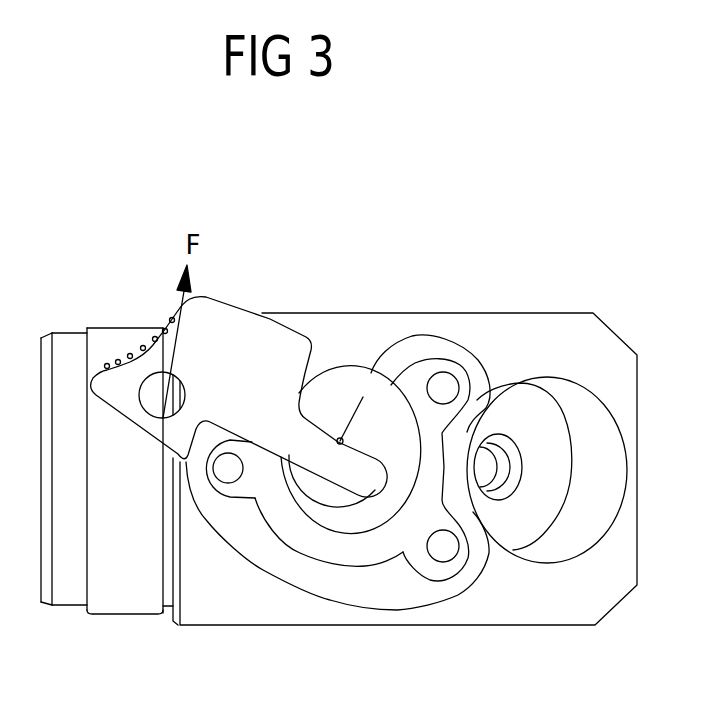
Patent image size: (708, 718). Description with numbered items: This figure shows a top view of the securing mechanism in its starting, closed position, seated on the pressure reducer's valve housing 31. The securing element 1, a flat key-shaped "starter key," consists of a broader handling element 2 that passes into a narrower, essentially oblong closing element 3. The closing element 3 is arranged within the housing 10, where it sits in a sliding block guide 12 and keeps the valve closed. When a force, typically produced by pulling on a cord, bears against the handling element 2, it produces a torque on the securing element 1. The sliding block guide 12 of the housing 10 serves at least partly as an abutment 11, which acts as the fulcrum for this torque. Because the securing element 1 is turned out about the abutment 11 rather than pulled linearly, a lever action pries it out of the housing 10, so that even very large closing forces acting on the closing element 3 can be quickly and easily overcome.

The actuating direction of brake lever 1 is at (250, 300).
The brake lever 2 is at (258, 352).
The piston seal 3 is at (368, 480).
The flange plate 10 is at (420, 592).
The pivot axis 11 is at (342, 439).
The sealing ring 12 is at (352, 507).
The wheel cylinder housing 31 is at (578, 612).